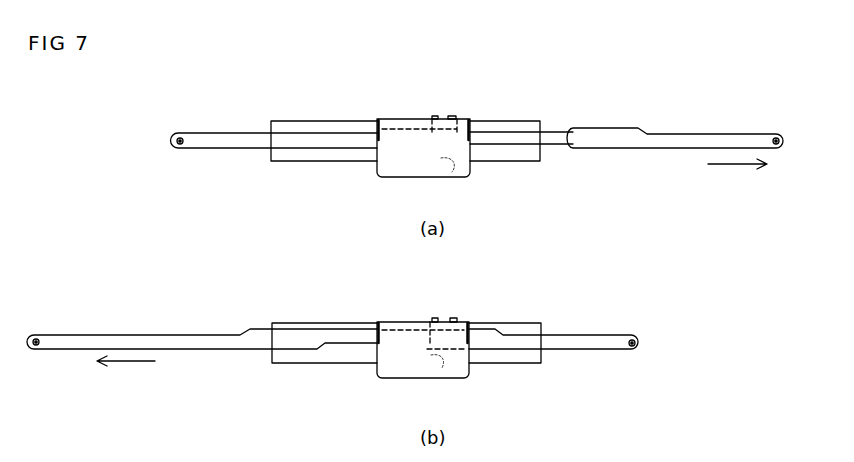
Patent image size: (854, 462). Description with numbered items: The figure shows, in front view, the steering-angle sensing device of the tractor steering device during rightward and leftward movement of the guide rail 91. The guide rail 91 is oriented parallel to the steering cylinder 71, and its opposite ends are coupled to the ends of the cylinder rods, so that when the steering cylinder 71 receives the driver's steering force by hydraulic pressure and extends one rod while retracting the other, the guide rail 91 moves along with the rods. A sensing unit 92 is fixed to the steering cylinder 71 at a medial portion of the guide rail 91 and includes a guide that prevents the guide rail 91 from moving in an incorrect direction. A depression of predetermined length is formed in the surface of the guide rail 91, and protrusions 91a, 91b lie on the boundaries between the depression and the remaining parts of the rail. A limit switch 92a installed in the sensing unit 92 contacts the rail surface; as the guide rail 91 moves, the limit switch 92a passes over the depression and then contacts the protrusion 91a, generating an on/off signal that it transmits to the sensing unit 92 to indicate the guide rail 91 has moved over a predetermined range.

The steering cylinder 71 is at (317, 128).
The guide rail 91 is at (240, 142).
The protrusion 91a is at (567, 131).
The protrusion 91b is at (318, 345).
The sensing unit 92 is at (403, 125).
The limit switch 92a is at (448, 167).